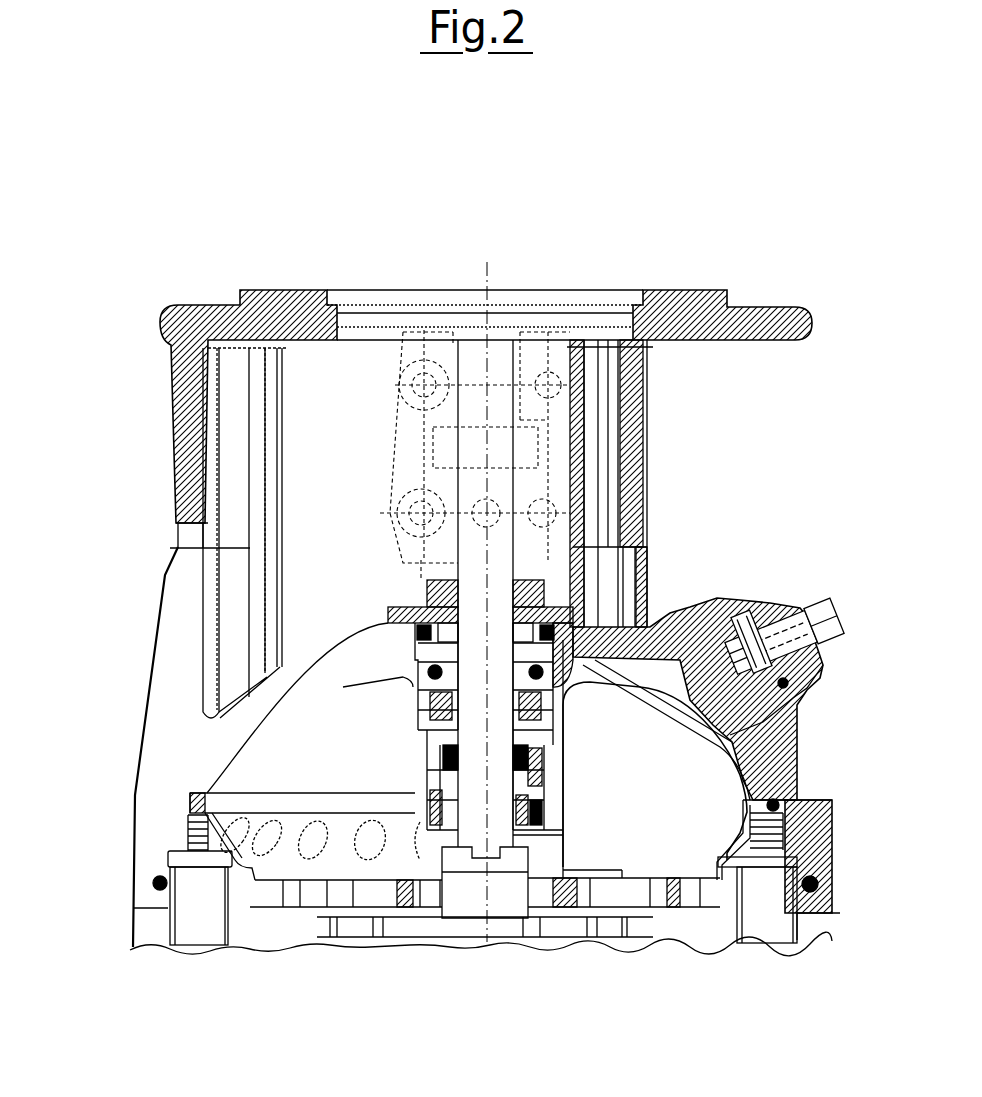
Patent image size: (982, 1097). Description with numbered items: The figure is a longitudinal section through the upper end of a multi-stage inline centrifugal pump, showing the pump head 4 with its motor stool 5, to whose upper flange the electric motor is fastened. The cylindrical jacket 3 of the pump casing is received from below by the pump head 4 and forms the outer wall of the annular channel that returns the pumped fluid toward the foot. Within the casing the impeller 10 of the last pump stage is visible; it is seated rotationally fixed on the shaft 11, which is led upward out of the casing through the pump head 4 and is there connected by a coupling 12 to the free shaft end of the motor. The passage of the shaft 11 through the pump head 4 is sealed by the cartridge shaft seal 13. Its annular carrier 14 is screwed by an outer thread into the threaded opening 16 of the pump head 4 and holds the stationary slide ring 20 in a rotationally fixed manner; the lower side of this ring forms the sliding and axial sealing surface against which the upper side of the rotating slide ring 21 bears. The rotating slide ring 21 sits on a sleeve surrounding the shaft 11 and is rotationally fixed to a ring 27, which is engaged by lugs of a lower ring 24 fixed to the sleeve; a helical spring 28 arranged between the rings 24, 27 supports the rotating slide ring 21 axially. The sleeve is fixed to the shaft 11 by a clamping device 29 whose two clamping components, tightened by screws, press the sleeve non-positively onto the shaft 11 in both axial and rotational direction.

The cylindrical jacket component 3 is at (810, 937).
The pump head 4 is at (778, 760).
The motor stool 5 is at (637, 418).
The impeller 10 is at (603, 945).
The shaft 11 is at (470, 557).
The coupling 12 is at (553, 465).
The cartridge shaft seal 13 is at (573, 670).
The carrier 14 is at (400, 605).
The opening 16 is at (388, 628).
The stationary slide ring 20 is at (417, 663).
The rotating slide ring 21 is at (415, 730).
The ring 24 is at (537, 805).
The ring 27 is at (423, 768).
The helical spring 28 is at (553, 773).
The clamping device 29 is at (548, 595).